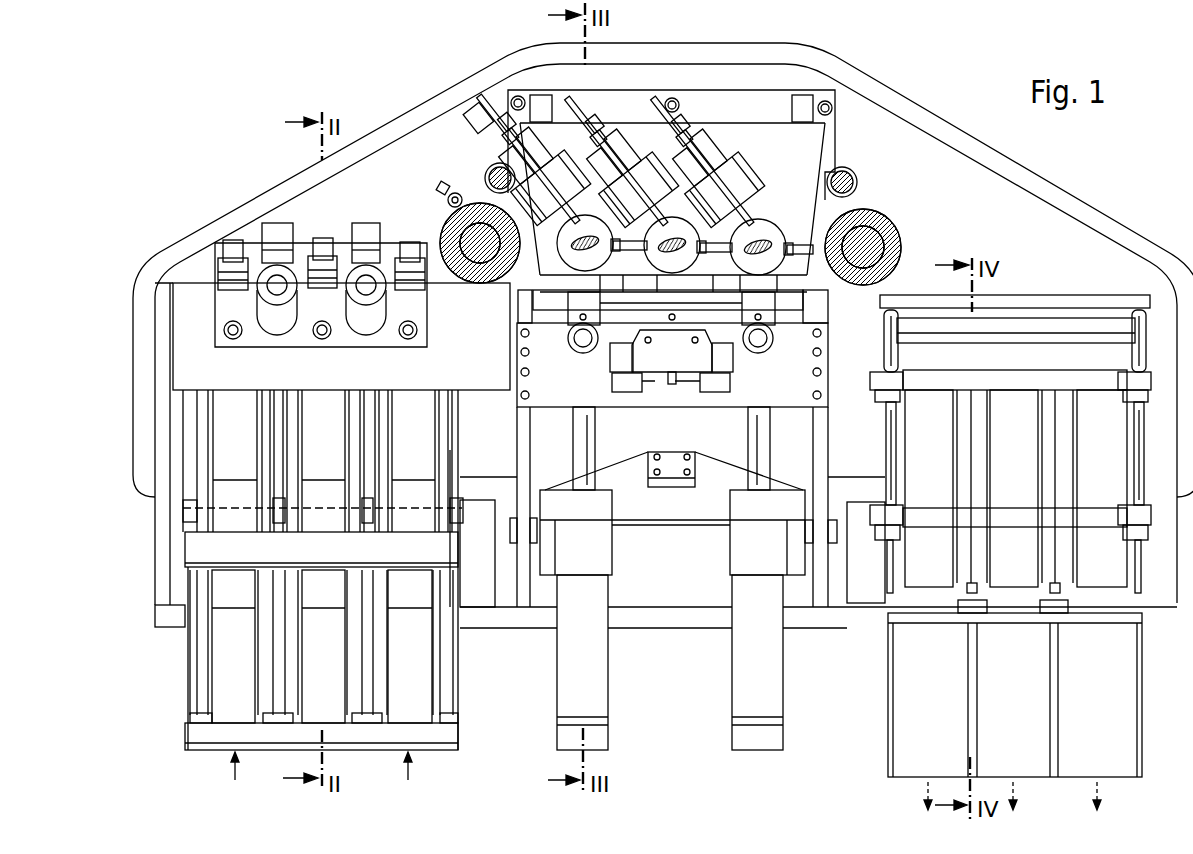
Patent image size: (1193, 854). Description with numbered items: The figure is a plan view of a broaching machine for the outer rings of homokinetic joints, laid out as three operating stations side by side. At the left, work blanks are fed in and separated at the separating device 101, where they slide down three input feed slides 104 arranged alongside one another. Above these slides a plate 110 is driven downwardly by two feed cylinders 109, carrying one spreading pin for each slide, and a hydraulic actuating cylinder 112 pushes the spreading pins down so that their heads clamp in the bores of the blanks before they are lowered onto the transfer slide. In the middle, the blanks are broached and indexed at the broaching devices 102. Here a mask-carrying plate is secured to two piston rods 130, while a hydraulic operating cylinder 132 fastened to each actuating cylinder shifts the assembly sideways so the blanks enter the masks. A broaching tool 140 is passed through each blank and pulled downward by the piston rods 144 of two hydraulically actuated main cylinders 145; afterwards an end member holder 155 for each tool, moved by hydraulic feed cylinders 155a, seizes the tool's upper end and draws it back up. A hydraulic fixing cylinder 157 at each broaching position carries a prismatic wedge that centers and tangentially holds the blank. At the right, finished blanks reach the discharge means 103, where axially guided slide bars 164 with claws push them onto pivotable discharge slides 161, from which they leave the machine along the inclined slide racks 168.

The separating device 101 is at (143, 500).
The broaching devices 102 is at (754, 145).
The discharge means 103 is at (1058, 288).
The input feed slides 104 is at (249, 685).
The feed cylinders 109 is at (347, 291).
The plate 110 is at (190, 290).
The hydraulic actuating cylinder 112 is at (233, 264).
The piston rods 130 is at (590, 432).
The hydraulic operating cylinder 132 is at (570, 685).
The broaching tool 140 is at (575, 245).
The piston rods 144 is at (470, 245).
The main cylinders 145 is at (474, 207).
The end member holder 155 is at (497, 165).
The feed cylinders 155a is at (848, 166).
The hydraulic fixing cylinder 157 is at (530, 163).
The discharge slides 161 is at (944, 571).
The slide bars 164 is at (888, 452).
The inclined slide racks 168 is at (945, 705).